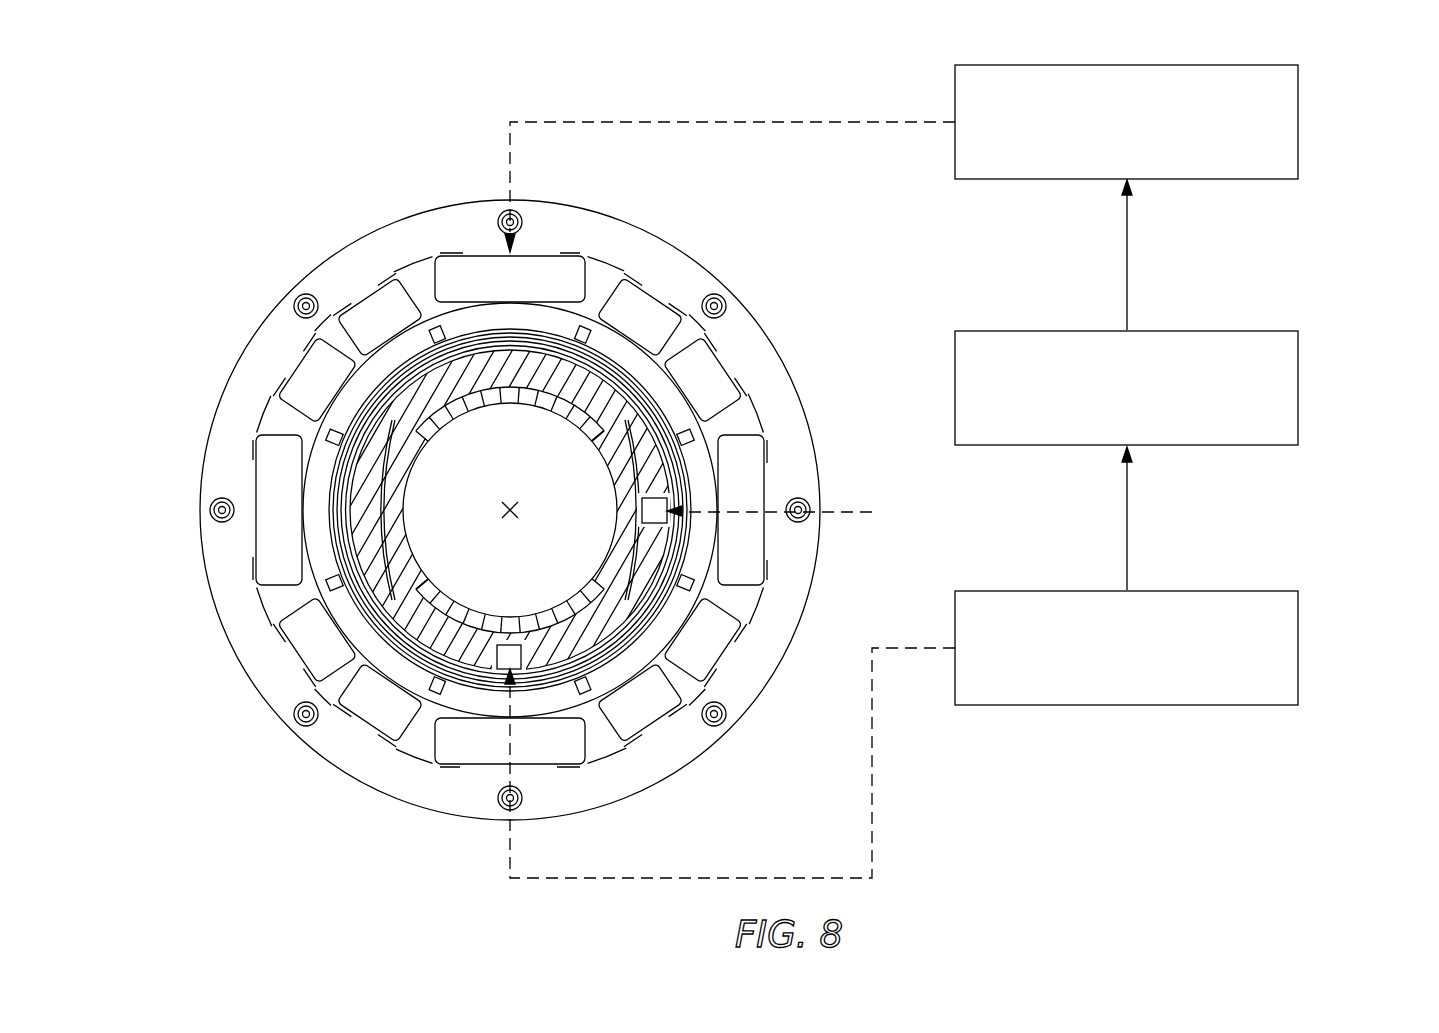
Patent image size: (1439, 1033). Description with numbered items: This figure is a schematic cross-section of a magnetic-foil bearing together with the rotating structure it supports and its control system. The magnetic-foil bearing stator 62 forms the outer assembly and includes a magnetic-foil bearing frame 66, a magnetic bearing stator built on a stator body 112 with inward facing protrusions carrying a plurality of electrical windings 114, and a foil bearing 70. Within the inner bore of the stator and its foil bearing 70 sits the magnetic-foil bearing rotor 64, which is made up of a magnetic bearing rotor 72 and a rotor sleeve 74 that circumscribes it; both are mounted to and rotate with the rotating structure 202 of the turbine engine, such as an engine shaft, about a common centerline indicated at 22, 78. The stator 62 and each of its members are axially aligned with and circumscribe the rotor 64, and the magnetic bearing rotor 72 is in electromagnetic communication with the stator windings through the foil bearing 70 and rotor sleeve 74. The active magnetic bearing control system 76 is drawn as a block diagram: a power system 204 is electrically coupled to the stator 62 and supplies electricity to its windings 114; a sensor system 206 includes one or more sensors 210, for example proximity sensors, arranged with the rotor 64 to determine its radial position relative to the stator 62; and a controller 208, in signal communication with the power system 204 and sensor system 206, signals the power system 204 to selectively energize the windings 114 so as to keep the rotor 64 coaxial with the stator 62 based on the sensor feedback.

The magnetic-foil bearing stator 62 is at (160, 435).
The stator body 112 is at (232, 352).
The magnetic-foil bearing frame 66 is at (298, 432).
The electrical windings 114 is at (302, 357).
The magnetic-foil bearing rotor 64 is at (510, 510).
The magnetic bearing rotor 72 is at (510, 400).
The rotating structure 202 is at (572, 432).
The foil bearing 70 is at (444, 636).
The rotor sleeve 74 is at (356, 512).
The sensors 210 is at (642, 510).
The rotation axis 22 is at (564, 517).
The center axis 78 is at (516, 510).
The active magnetic bearing control system 76 is at (968, 453).
The power system 204 is at (1300, 134).
The controller 208 is at (1300, 400).
The sensor system 206 is at (1300, 658).